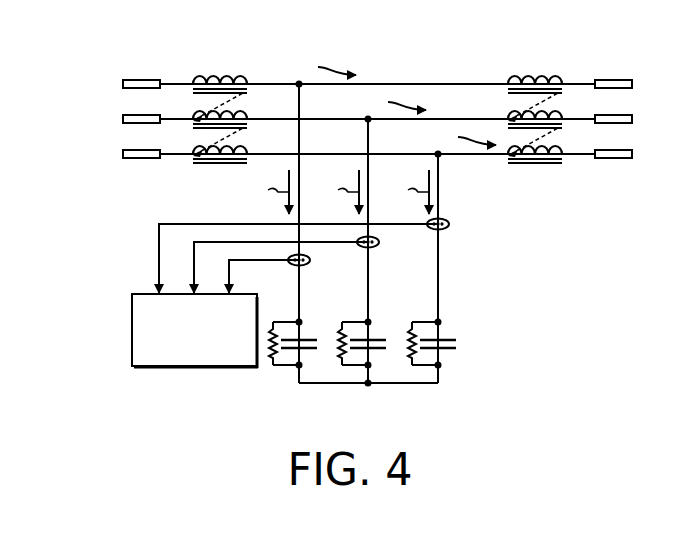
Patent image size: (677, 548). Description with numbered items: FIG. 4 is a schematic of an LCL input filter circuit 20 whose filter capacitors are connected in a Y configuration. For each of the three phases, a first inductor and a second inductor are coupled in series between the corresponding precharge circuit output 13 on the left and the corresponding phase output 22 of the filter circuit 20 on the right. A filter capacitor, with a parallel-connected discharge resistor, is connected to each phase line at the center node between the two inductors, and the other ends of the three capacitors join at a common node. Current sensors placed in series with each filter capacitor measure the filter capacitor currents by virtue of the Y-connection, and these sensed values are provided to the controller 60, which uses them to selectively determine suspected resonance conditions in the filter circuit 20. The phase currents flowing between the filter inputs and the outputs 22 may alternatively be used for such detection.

The LCL filter circuit 20 is at (377, 222).
The precharge circuit outputs 13 is at (112, 121).
The phase outputs 22 is at (593, 176).
The controller 60 is at (132, 330).